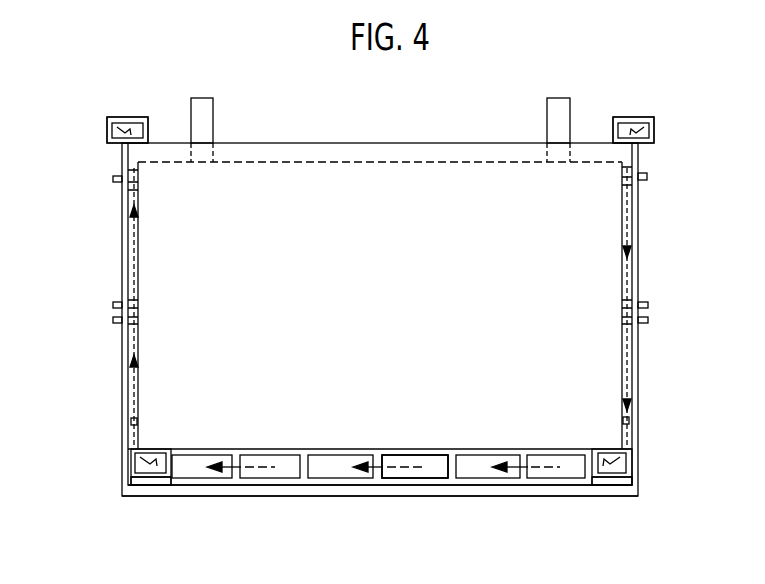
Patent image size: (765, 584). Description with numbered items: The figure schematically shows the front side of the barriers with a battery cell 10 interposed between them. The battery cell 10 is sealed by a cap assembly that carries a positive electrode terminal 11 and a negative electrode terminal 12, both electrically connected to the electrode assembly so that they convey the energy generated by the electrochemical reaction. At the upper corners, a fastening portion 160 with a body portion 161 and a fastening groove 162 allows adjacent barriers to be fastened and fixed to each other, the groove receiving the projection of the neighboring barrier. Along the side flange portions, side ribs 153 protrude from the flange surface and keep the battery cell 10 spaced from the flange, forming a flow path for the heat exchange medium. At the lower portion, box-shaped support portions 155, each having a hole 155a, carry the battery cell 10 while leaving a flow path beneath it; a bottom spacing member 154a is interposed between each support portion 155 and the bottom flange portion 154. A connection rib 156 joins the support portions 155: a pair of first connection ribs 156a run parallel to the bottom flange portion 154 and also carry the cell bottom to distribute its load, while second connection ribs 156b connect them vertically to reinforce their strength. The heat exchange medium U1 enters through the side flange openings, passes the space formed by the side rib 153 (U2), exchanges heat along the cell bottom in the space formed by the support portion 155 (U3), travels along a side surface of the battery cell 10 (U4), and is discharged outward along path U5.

The battery cell 10 is at (340, 181).
The positive electrode terminal 11 is at (207, 98).
The negative electrode terminal 12 is at (553, 98).
The side rib 153 is at (136, 188).
The bottom flange portion 154 is at (325, 488).
The bottom spacing member 154a is at (153, 481).
The support portion 155 is at (152, 449).
The hole 155a is at (131, 461).
The connection rib 156 is at (473, 394).
The first connection rib 156a is at (440, 453).
The second connection rib 156b is at (378, 458).
The fastening portion 160 is at (133, 106).
The body portion 161 is at (119, 117).
The fastening groove 162 is at (113, 128).
The heat exchange medium U1 is at (660, 195).
The heat exchange medium flow through side rib space U2 is at (628, 222).
The heat exchange medium flow along cell bottom U3 is at (398, 468).
The heat exchange medium flow along cell side surface U4 is at (134, 240).
The fifth direction U5 is at (110, 172).